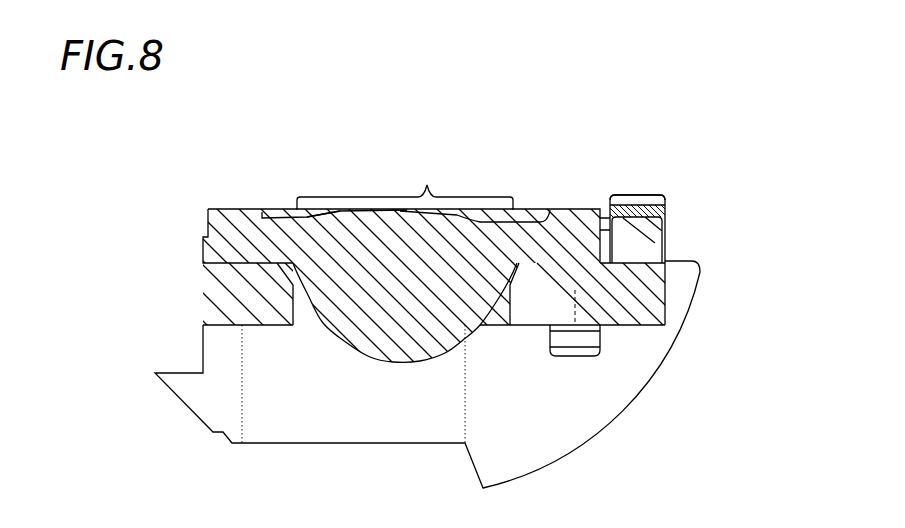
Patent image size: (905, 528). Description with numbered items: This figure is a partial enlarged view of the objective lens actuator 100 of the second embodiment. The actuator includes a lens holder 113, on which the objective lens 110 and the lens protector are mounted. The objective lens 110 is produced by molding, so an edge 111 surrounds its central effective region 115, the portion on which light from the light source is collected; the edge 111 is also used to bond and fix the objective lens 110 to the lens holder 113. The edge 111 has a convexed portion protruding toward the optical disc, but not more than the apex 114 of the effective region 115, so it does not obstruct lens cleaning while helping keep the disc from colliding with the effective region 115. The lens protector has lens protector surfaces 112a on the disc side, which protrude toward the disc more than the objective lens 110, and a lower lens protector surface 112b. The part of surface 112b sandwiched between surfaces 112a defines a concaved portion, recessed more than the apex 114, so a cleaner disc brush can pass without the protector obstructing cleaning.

The objective lens actuator 100 is at (514, 150).
The objective lens 110 is at (343, 210).
The edge 111 is at (237, 208).
The lens protector surface 112a is at (633, 202).
The lens protector surface 112b is at (665, 223).
The lens holder 113 is at (217, 302).
The apex 114 is at (407, 210).
The effective region 115 is at (405, 182).